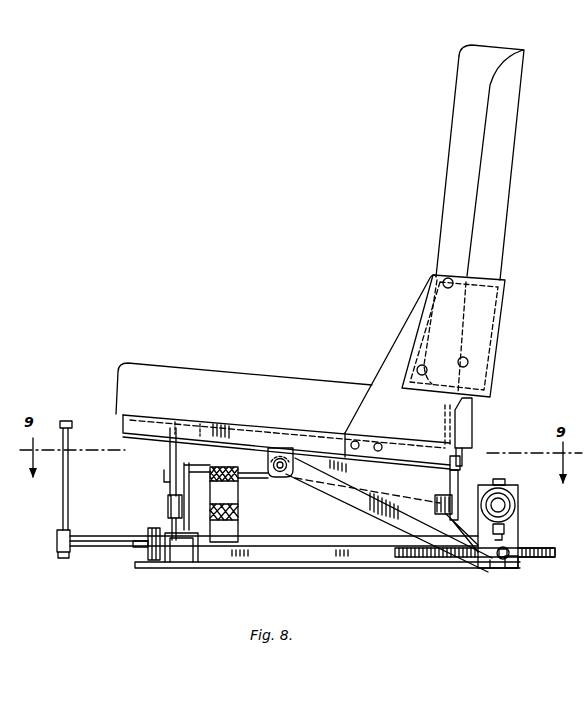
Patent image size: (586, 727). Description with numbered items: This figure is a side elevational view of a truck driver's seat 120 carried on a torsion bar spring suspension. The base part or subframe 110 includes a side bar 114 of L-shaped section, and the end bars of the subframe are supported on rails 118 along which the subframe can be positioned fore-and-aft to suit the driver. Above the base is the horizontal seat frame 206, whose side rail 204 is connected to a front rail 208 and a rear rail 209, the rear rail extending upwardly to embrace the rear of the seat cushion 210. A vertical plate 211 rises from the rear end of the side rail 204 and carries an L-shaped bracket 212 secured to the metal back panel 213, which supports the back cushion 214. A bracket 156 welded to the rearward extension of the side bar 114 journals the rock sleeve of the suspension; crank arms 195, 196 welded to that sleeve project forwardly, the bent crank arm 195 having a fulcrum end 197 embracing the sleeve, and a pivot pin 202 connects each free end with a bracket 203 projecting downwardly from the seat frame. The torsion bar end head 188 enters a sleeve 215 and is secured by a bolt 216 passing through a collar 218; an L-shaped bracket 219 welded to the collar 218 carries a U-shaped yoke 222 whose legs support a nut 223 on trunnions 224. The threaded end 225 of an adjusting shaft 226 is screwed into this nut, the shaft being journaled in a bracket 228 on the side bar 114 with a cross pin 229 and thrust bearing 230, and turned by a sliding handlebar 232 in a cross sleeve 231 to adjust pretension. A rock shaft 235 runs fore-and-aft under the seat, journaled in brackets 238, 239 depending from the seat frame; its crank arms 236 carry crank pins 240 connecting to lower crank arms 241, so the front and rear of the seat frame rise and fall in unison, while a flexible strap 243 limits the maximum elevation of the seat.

The seat 120 is at (457, 162).
The metal back panel 213 is at (503, 197).
The back cushion 214 is at (440, 193).
The bracket 212 is at (483, 303).
The vertical plate 211 is at (402, 332).
The seat cushion 210 is at (249, 375).
The front rail 208 is at (120, 428).
The seat frame 206 is at (110, 422).
The bracket 238 is at (198, 438).
The rear rail 209 is at (473, 428).
The bracket 239 is at (464, 461).
The side rail 204 is at (152, 431).
The rock shaft 235 is at (196, 440).
The crank arm 236 is at (171, 478).
The crank pin 240 is at (168, 500).
The crank arm 241 is at (170, 522).
The thrust bearing 230 is at (152, 535).
The cross pin 229 is at (133, 546).
The bracket 228 is at (201, 565).
The sliding handlebar 232 is at (62, 512).
The cross sleeve 231 is at (57, 545).
The adjusting shaft 226 is at (277, 549).
The rails 118 is at (300, 565).
The base part or subframe 110 is at (384, 572).
The side bar 114 is at (406, 569).
The threaded end 225 is at (541, 560).
The bracket 203 is at (268, 455).
The pivot pin 202 is at (281, 470).
The flexible strap 243 is at (236, 506).
The crank arm 195 is at (343, 500).
The crank arm 196 is at (470, 485).
The fulcrum end 197 is at (480, 500).
The L-shaped bracket 219 is at (486, 541).
The sleeve 215 is at (516, 500).
The end head 188 is at (502, 507).
The bracket 156 is at (521, 490).
The bolt 216 is at (506, 484).
The collar 218 is at (506, 529).
The trunnions 224 is at (503, 560).
The nut 223 is at (498, 565).
The U-shaped yoke 222 is at (512, 568).